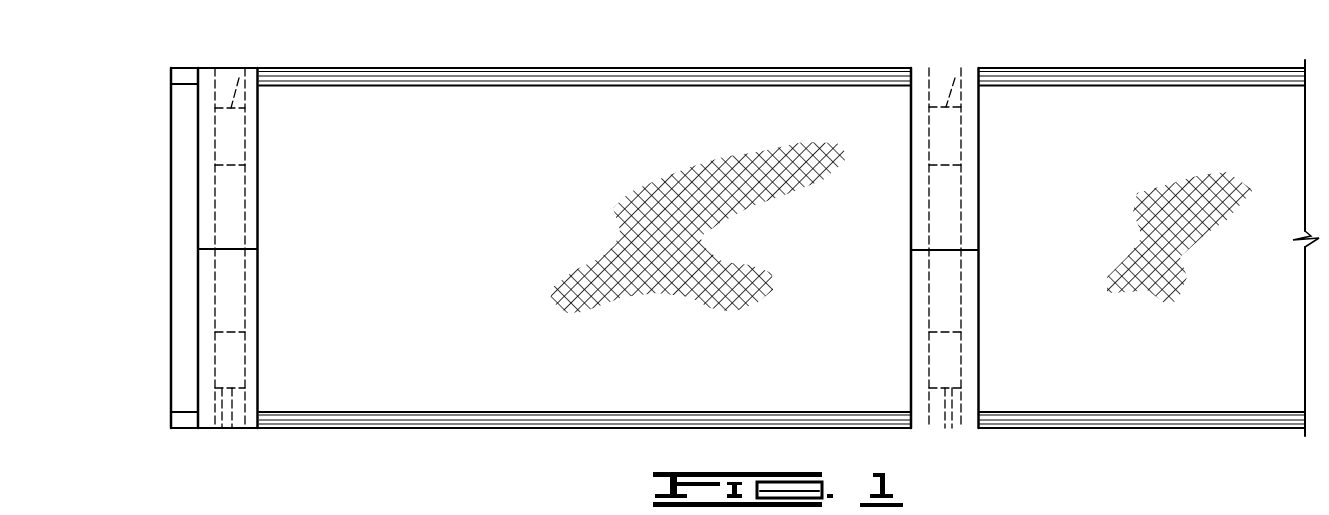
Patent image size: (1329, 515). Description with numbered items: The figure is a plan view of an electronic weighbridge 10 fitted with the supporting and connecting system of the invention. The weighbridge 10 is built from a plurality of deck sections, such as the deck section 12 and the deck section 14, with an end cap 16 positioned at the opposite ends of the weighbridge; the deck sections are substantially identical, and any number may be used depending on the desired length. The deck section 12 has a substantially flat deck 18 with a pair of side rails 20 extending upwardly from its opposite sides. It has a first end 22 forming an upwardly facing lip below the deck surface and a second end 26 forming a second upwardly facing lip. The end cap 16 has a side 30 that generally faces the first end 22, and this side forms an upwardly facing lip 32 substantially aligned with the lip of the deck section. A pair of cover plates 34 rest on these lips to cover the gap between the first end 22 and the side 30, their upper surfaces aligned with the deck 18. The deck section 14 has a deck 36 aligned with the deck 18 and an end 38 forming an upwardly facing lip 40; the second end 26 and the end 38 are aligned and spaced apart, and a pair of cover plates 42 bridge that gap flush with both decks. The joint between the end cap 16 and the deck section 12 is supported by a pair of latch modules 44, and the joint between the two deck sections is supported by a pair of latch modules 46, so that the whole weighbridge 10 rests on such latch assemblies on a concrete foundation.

The weighbridge 10 is at (789, 243).
The deck section 12 is at (675, 171).
The deck section 14 is at (1152, 167).
The end cap 16 is at (234, 273).
The deck 18 is at (537, 243).
The side rails 20 is at (437, 75).
The first end 22 is at (238, 428).
The second end 26 is at (924, 271).
The side 30 is at (215, 428).
The lip 32 is at (152, 510).
The cover plates 34 is at (250, 222).
The deck 36 is at (1088, 245).
The end 38 is at (958, 428).
The lip 40 is at (1009, 511).
The cover plates 42 is at (918, 232).
The latch modules 44 is at (250, 67).
The latch modules 46 is at (943, 105).